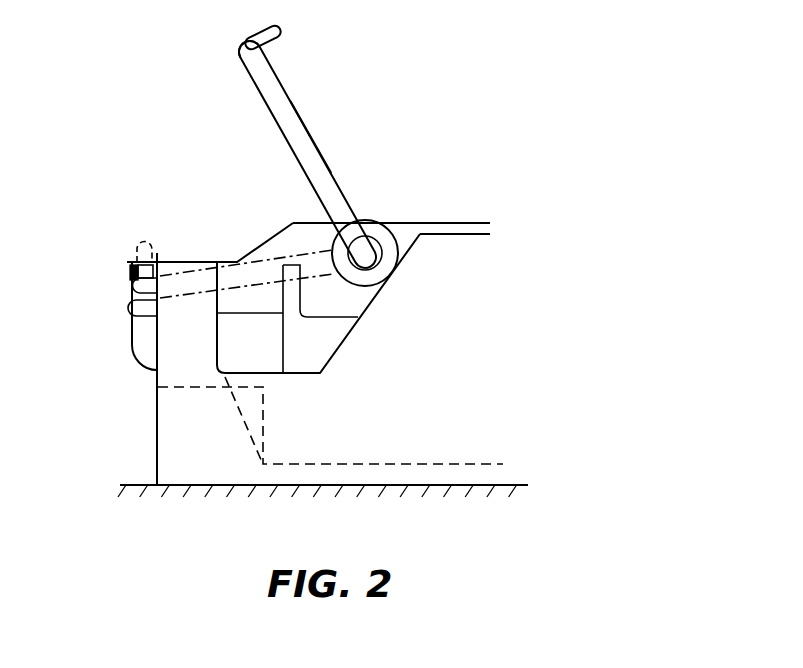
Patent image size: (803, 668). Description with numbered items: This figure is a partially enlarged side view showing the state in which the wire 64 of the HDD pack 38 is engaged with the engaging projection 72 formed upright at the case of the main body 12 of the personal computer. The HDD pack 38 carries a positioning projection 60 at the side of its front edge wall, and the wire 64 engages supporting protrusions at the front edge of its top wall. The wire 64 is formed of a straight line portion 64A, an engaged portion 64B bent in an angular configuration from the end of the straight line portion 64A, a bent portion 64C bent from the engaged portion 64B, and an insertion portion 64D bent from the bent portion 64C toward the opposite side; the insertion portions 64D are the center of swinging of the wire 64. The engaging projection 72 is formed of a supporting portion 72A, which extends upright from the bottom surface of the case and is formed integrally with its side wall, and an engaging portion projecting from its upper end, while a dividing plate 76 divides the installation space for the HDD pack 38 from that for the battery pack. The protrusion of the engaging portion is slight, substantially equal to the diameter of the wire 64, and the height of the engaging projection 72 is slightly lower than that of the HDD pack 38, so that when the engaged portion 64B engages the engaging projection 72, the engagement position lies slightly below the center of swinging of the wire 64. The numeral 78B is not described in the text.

The main body 12 is at (140, 485).
The HDD pack 38 is at (484, 214).
The positioning projections 60 is at (274, 374).
The wire 64 is at (322, 136).
The straight line portion 64A is at (283, 31).
The engaged portions 64B is at (238, 60).
The bent portions 64C is at (332, 173).
The insertion portions 64D is at (386, 225).
The engaging projection 72 is at (146, 421).
The supporting portion 72A is at (171, 330).
The dividing plate 76 is at (413, 466).
The latch member 78B is at (155, 257).